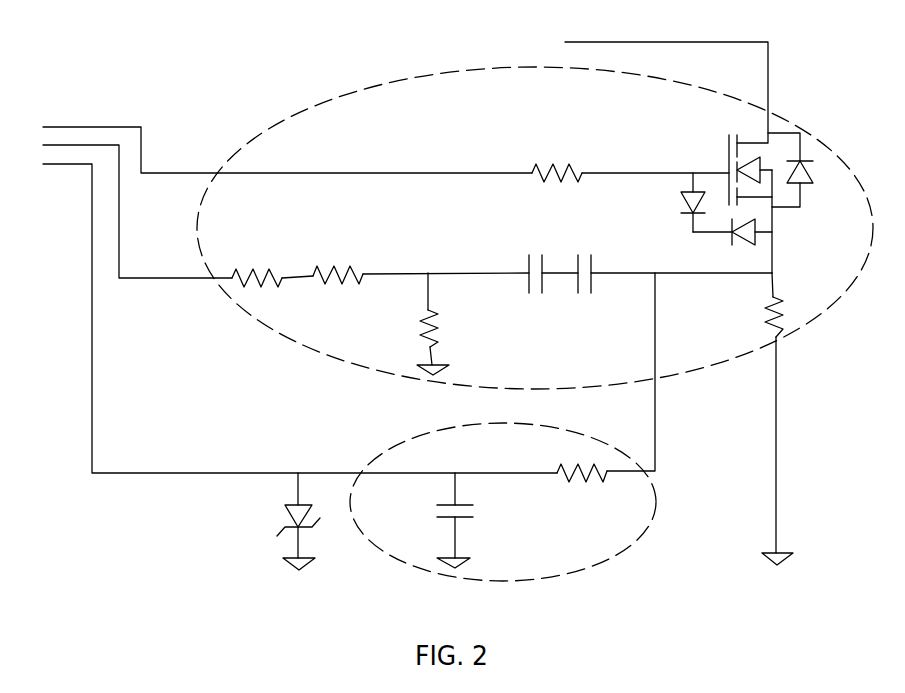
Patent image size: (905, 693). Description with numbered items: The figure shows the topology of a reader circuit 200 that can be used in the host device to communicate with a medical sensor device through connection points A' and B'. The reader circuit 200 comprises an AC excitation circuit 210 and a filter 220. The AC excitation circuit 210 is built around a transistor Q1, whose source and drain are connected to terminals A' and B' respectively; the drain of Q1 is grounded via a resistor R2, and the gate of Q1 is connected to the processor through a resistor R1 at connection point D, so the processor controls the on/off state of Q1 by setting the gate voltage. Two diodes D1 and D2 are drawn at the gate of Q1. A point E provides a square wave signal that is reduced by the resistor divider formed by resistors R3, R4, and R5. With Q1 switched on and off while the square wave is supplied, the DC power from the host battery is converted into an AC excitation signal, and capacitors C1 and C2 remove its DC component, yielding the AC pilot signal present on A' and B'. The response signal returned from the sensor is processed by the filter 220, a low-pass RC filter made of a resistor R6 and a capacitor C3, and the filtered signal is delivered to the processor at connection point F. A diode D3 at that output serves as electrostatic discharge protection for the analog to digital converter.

The reader circuit 200 is at (254, 66).
The AC excitation circuit 210 is at (787, 122).
The filter 220 is at (404, 438).
The resistor R1 is at (630, 160).
The resistor R2 is at (758, 305).
The resistor R3 is at (444, 324).
The resistor R4 is at (421, 261).
The resistor R5 is at (272, 263).
The resistor R6 is at (606, 395).
The capacitor C1 is at (675, 284).
The capacitor C2 is at (551, 286).
The capacitor C3 is at (471, 520).
The gate diode D1 is at (693, 202).
The gate diode D2 is at (732, 232).
The diode D3 is at (311, 521).
The transistor Q1 is at (756, 203).